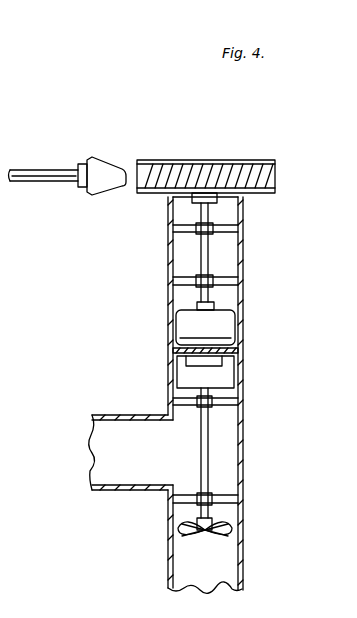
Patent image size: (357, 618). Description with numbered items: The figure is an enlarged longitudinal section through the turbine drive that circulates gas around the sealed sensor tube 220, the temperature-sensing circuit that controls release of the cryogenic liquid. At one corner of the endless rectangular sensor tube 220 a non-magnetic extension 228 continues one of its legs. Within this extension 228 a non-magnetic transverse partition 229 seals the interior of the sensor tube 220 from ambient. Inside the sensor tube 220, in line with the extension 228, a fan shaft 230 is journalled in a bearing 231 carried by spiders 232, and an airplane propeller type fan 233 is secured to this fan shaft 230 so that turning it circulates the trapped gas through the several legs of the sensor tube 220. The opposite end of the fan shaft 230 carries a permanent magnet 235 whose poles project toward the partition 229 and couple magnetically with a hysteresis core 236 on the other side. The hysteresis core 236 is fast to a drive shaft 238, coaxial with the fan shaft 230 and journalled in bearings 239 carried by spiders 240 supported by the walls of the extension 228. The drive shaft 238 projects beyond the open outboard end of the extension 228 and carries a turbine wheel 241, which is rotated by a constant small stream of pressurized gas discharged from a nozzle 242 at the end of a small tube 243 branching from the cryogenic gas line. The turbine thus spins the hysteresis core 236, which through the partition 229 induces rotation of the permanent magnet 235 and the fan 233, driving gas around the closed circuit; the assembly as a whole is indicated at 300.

The sensor tube 220 is at (112, 490).
The non-magnetic extension 228 is at (168, 294).
The non-magnetic transverse partition 229 is at (236, 351).
The fan shaft 230 is at (209, 461).
The bearing 231 is at (212, 403).
The spiders 232 is at (228, 401).
The airplane propeller type fan 233 is at (222, 531).
The permanent magnet 235 is at (225, 381).
The hysteresis core 236 is at (225, 330).
The drive shaft 238 is at (209, 262).
The bearings 239 is at (214, 231).
The spiders 240 is at (232, 228).
The turbine wheel 241 is at (275, 163).
The nozzle 242 is at (106, 183).
The small tube 243 is at (51, 181).
The assembly 300 is at (0, 241).